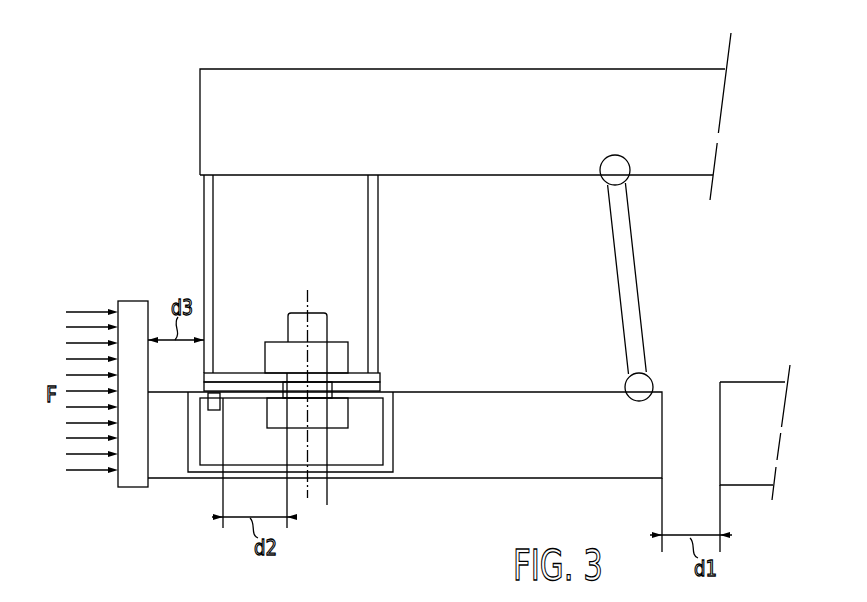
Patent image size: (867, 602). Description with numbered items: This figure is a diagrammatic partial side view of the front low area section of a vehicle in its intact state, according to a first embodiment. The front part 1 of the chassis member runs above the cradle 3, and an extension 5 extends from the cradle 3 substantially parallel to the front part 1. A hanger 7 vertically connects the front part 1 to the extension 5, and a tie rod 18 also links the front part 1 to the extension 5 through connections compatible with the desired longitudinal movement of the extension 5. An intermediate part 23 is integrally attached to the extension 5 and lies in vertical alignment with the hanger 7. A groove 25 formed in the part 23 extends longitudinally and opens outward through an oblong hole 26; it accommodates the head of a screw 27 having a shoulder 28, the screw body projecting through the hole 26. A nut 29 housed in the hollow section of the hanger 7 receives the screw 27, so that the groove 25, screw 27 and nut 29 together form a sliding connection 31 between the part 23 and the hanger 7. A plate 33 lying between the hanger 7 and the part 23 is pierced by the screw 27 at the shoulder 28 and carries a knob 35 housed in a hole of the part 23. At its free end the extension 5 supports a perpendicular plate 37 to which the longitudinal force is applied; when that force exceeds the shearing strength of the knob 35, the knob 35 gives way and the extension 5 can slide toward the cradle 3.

The front part of the chassis member 1 is at (553, 69).
The cradle 3 is at (760, 381).
The extension 5 is at (510, 478).
The hanger 7 is at (378, 237).
The tie rod 18 is at (640, 320).
The intermediate part 23 is at (390, 437).
The groove 25 is at (270, 447).
The oblong hole 26 is at (238, 393).
The screw 27 is at (348, 417).
The shoulder 28 is at (336, 388).
The nut 29 is at (263, 352).
The sliding connection 31 is at (322, 440).
The plate 33 is at (382, 390).
The knob 35 is at (217, 412).
The plate 37 is at (150, 301).